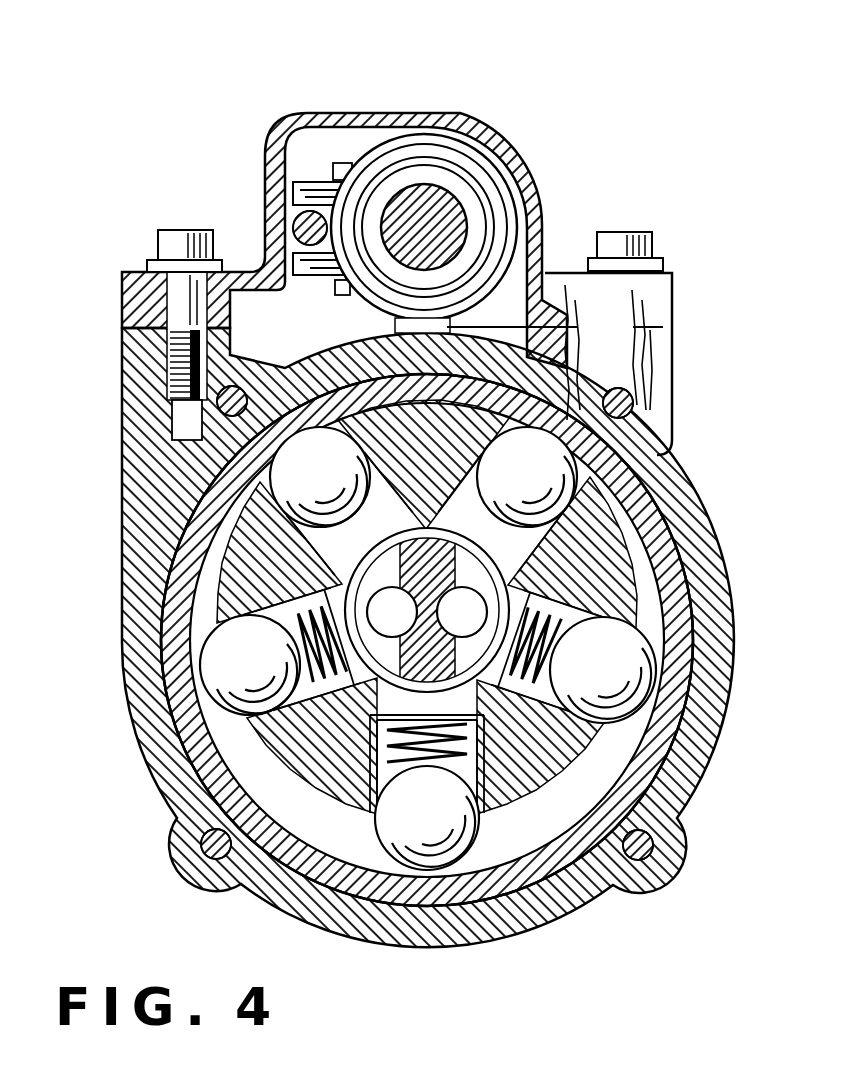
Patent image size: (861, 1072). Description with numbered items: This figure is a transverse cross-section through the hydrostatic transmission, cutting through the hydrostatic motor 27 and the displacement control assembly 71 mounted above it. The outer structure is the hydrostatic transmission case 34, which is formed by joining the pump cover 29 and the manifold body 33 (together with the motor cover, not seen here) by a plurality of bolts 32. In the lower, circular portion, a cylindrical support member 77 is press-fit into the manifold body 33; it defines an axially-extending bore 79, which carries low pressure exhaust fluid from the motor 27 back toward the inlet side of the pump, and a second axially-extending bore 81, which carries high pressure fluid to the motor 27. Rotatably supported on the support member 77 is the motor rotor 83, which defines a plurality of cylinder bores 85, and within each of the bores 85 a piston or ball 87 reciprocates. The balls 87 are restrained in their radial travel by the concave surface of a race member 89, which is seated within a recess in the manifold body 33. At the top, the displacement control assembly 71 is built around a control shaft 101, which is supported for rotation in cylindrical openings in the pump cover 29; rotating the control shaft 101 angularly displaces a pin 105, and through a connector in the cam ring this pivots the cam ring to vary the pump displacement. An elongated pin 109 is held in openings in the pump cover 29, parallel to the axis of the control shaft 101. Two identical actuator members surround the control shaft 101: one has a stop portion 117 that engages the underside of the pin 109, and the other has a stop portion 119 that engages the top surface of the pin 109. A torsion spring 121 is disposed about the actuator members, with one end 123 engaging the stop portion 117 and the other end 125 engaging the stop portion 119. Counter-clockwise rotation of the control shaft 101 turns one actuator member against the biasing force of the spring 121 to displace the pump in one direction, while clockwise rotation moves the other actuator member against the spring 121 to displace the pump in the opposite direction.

The hydrostatic motor 27 is at (160, 531).
The pump cover 29 is at (483, 133).
The bolts 32 is at (643, 233).
The manifold body 33 is at (145, 471).
The hydrostatic transmission case 34 is at (700, 333).
The displacement control assembly 71 is at (322, 138).
The cylindrical support member 77 is at (372, 702).
The axially-extending bore 79 is at (387, 613).
The axially-extending bore 81 is at (465, 612).
The motor rotor 83 is at (512, 777).
The cylinder bores 85 is at (368, 805).
The piston or ball 87 is at (637, 673).
The race member 89 is at (197, 739).
The control shaft 101 is at (453, 222).
The pin 105 is at (555, 325).
The elongated pin 109 is at (293, 227).
The stop portion 117 is at (300, 277).
The stop portion 119 is at (267, 167).
The torsion spring 121 is at (423, 147).
The spring end 123 is at (333, 296).
The spring end 125 is at (341, 162).